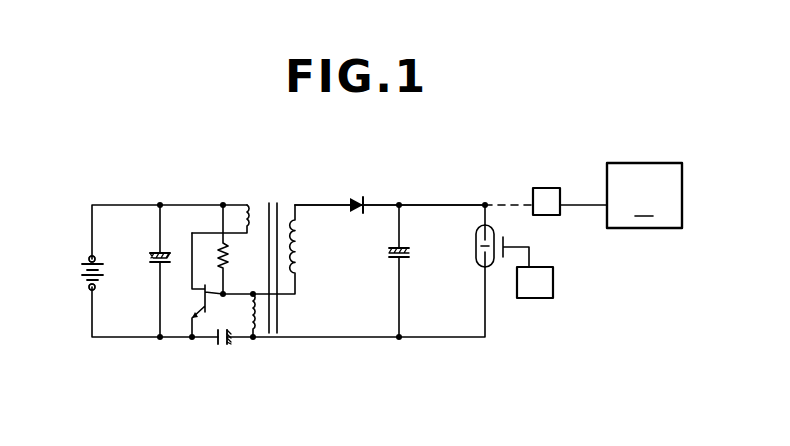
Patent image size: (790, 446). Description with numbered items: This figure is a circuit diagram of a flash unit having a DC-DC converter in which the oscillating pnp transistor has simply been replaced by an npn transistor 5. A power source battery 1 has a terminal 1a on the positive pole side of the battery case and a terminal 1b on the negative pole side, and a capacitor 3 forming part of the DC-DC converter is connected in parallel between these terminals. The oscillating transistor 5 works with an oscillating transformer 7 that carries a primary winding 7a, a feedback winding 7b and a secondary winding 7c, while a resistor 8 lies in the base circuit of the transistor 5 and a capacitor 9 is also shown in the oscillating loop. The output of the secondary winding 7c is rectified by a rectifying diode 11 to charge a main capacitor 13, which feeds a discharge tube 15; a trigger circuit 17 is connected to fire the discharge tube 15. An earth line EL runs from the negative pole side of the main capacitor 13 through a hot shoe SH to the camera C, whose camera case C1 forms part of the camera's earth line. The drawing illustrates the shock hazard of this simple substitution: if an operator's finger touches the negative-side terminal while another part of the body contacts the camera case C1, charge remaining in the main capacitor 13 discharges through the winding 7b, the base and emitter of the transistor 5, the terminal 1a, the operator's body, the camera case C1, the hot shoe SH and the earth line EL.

The power source battery 1 is at (82, 264).
The terminal 1a is at (90, 256).
The terminal 1b is at (88, 291).
The capacitor 3 is at (156, 250).
The transistor 5 is at (200, 293).
The oscillating transformer 7 is at (263, 272).
The primary winding 7a is at (248, 206).
The winding 7b is at (254, 338).
The secondary winding 7c is at (297, 269).
The resistor 8 is at (227, 250).
The feedback capacitor 9 is at (220, 342).
The rectifying diode 11 is at (357, 200).
The main capacitor 13 is at (391, 256).
The discharge tube 15 is at (476, 249).
The trigger circuit 17 is at (517, 298).
The earth line EL is at (439, 205).
The hot shoe SH is at (546, 188).
The camera C is at (640, 228).
The camera case C1 is at (644, 221).